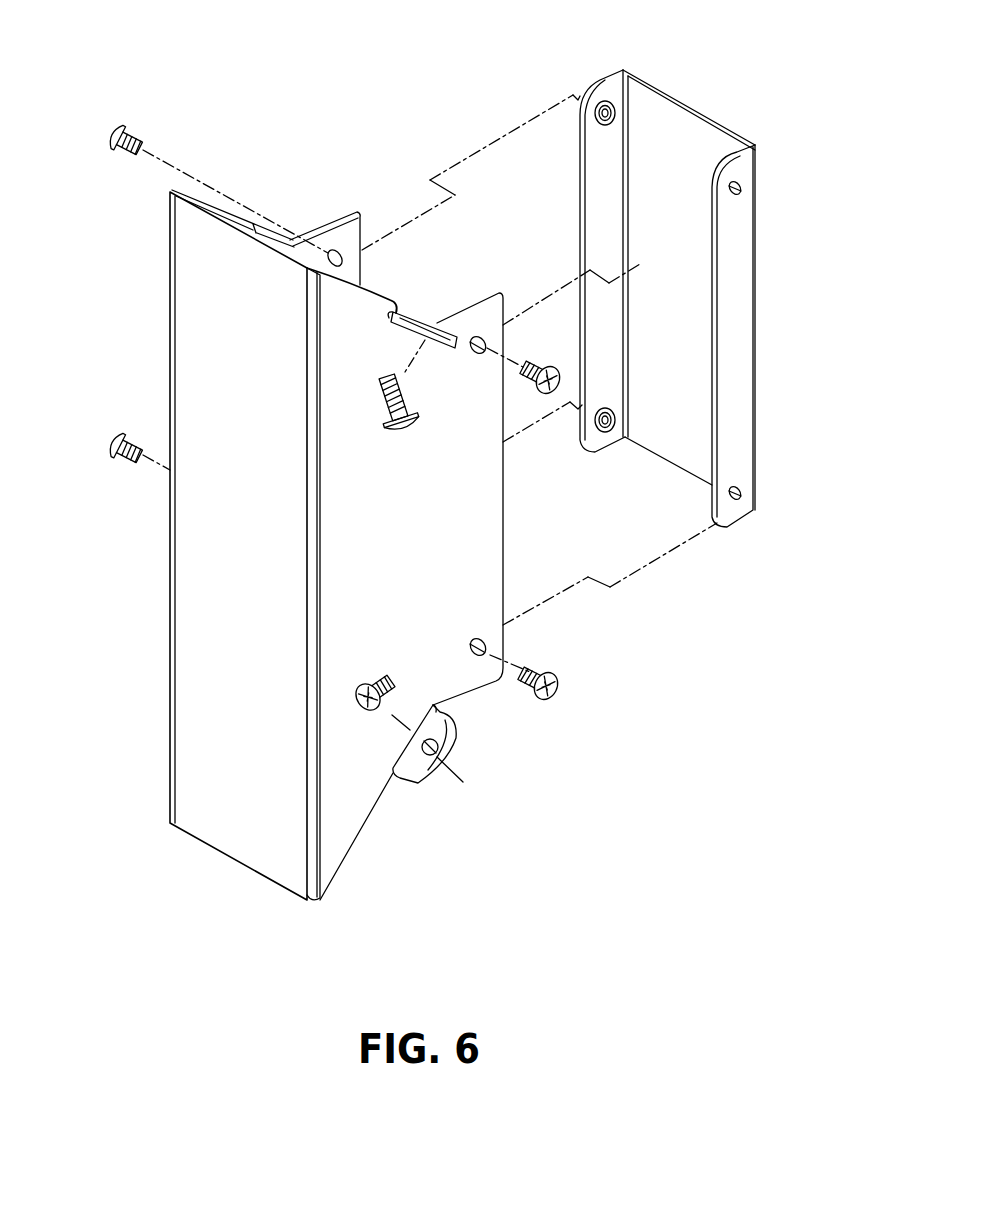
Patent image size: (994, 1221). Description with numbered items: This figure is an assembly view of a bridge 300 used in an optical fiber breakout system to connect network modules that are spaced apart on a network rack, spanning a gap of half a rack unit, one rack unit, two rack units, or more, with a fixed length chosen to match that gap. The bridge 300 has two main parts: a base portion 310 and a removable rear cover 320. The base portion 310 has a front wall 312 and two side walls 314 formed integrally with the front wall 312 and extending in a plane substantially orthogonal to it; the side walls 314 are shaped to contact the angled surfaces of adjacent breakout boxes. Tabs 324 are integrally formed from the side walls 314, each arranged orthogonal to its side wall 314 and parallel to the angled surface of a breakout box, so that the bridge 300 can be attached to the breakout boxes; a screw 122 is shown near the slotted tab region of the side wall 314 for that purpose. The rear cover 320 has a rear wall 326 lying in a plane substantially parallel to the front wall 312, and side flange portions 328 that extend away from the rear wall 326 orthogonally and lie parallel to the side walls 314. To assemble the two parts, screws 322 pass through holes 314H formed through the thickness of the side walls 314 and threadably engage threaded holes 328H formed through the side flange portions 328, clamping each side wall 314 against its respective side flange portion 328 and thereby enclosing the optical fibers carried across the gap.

The bridge 300 is at (322, 60).
The base portion 310 is at (128, 267).
The front wall 312 is at (203, 575).
The side wall 314 is at (355, 212).
The hole 314H is at (332, 254).
The screw 122 is at (398, 432).
The tab 324 is at (462, 740).
The screw 322 is at (113, 125).
The rear cover 320 is at (683, 87).
The rear wall 326 is at (700, 135).
The side flange portion 328 is at (740, 355).
The threaded hole 328H is at (740, 186).